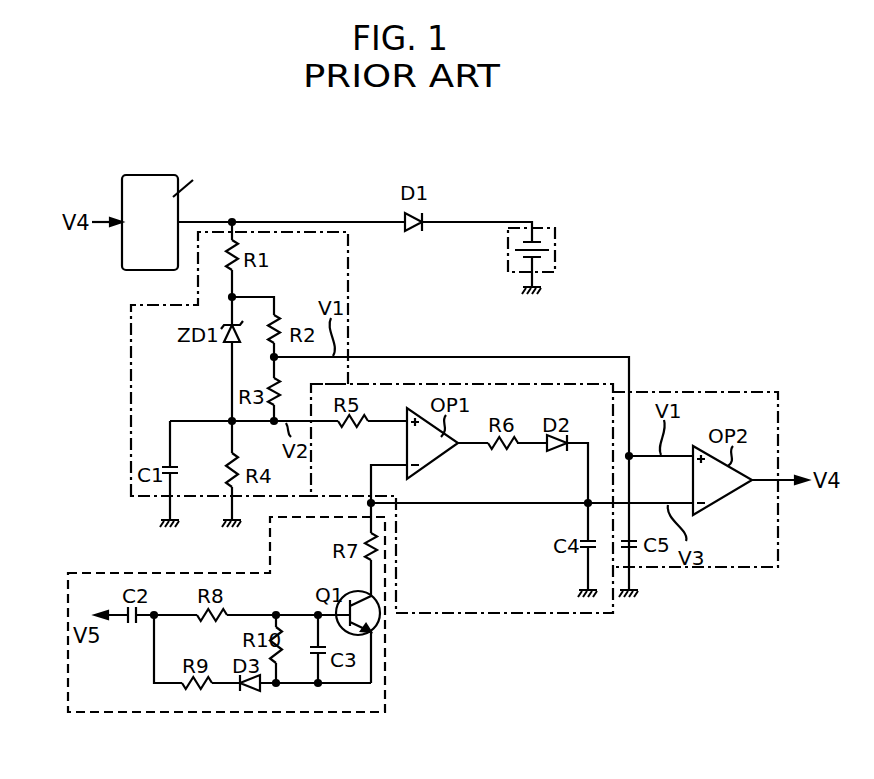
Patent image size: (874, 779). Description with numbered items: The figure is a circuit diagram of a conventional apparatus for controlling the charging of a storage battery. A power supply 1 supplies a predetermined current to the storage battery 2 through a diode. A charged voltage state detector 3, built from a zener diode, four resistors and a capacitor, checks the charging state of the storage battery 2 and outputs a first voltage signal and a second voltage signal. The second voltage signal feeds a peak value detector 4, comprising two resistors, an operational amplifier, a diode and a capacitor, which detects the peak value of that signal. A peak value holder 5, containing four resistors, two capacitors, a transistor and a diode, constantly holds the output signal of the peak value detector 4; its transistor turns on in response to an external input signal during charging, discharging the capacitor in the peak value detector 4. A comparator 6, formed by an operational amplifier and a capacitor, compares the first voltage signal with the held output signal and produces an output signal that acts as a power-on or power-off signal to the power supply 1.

The power supply 1 is at (157, 180).
The storage battery 2 is at (555, 246).
The charged voltage state detector 3 is at (131, 368).
The peak value detector 4 is at (503, 614).
The peak value holder 5 is at (385, 695).
The comparator 6 is at (728, 568).